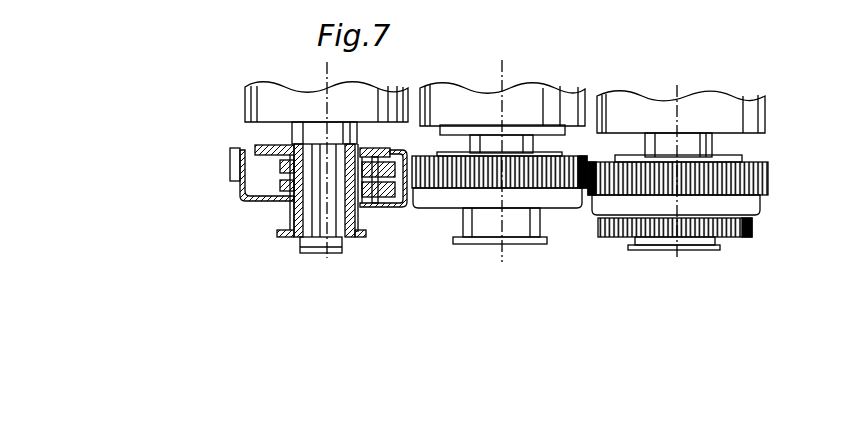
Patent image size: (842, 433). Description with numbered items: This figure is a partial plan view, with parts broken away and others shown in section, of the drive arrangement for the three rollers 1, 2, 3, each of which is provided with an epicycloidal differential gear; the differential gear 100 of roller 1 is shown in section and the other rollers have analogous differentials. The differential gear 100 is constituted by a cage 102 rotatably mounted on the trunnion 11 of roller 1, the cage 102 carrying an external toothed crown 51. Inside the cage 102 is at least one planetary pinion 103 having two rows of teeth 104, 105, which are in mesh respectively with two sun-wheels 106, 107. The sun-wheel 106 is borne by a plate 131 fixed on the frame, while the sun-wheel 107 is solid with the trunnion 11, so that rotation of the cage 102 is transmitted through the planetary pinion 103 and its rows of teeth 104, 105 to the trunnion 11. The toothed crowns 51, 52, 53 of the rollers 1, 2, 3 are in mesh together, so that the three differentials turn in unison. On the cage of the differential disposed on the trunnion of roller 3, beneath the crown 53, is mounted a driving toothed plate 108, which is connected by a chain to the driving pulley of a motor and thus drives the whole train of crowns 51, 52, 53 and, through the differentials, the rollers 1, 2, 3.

The roller 1 is at (255, 98).
The roller 2 is at (449, 102).
The roller 3 is at (757, 122).
The trunnion 11 is at (325, 180).
The external toothed crown 51 is at (240, 170).
The toothed crown 52 is at (528, 175).
The toothed crown 53 is at (770, 180).
The differential gear 100 is at (236, 197).
The cage 102 is at (407, 205).
The planetary pinion 103 is at (373, 203).
The row of teeth 104 is at (388, 203).
The row of teeth 105 is at (387, 165).
The sun-wheel 106 is at (283, 185).
The sun-wheel 107 is at (282, 167).
The driving toothed plate 108 is at (752, 232).
The plate 131 is at (282, 235).